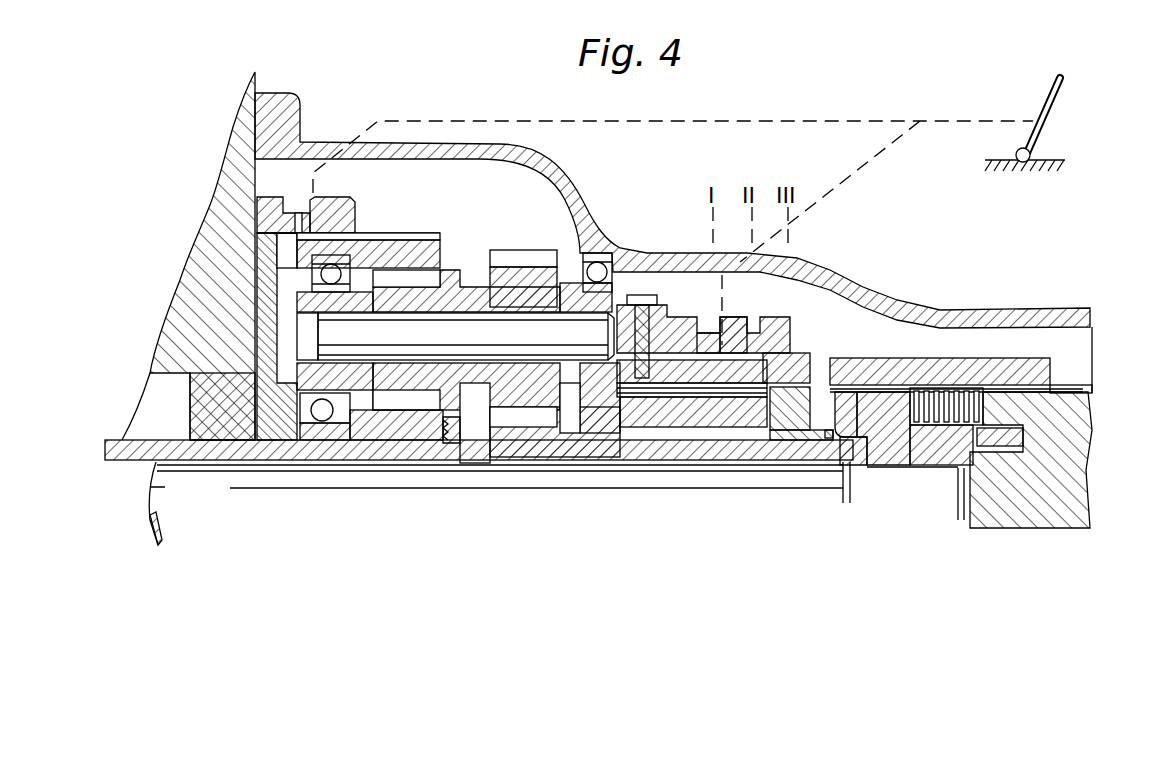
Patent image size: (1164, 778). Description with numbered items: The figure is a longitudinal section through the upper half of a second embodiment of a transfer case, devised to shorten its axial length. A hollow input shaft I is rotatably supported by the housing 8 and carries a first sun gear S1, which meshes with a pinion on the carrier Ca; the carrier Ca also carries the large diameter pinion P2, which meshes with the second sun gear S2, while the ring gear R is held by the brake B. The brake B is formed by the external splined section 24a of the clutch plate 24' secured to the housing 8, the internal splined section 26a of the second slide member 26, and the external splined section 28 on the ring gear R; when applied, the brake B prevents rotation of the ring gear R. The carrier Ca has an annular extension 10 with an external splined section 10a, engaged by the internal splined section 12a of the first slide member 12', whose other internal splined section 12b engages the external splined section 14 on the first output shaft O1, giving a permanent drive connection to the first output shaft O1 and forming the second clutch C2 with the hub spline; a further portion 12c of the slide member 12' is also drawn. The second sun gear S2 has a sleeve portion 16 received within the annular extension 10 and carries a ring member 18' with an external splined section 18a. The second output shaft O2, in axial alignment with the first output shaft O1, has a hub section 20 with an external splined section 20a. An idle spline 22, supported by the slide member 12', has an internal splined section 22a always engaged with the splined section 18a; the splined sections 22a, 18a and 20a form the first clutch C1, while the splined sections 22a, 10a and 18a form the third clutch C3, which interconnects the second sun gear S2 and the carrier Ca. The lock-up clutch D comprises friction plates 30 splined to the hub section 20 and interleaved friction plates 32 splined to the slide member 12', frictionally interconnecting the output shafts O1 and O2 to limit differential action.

The housing 8 is at (237, 212).
The annular extension 10 is at (658, 405).
The external splined section 10a is at (692, 396).
The internal splined section 12a is at (652, 330).
The internal splined section 12b is at (860, 376).
The rotary member portion 12c is at (717, 333).
The first slide member 12' is at (845, 334).
The external splined section 14 is at (1070, 393).
The sleeve portion 16 is at (713, 440).
The external splined section 18a is at (787, 440).
The ring member 18' is at (786, 459).
The hub section 20 is at (898, 410).
The external splined section 20a is at (877, 400).
The idle spline 22 is at (727, 372).
The internal splined section 22a is at (752, 372).
The clutch plate 24' is at (207, 336).
The external splined section 24a is at (247, 278).
The second slide member 26 is at (352, 202).
The internal splined section 26a is at (292, 258).
The external splined section 28 is at (418, 236).
The friction plates 30 is at (916, 427).
The interleaved friction plates 32 is at (916, 390).
The brake B is at (342, 182).
The ring gear R is at (410, 267).
The large diameter pinion P2 is at (533, 300).
The carrier Ca is at (352, 387).
The first sun gear S1 is at (412, 435).
The second sun gear S2 is at (550, 455).
The first clutch C1 is at (832, 378).
The second clutch C2 is at (905, 372).
The third clutch C3 is at (772, 372).
The lock-up clutch D is at (1018, 348).
The first output shaft O1 is at (1056, 504).
The second output shaft O2 is at (194, 520).
The input shaft I is at (105, 473).